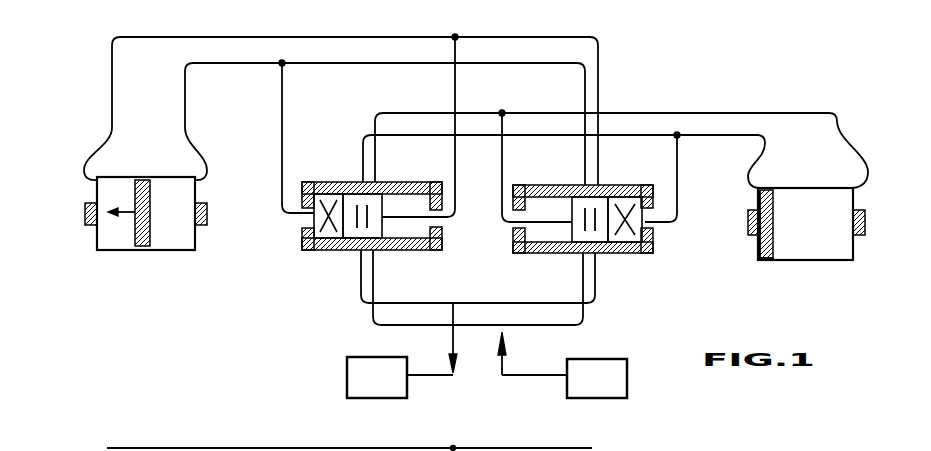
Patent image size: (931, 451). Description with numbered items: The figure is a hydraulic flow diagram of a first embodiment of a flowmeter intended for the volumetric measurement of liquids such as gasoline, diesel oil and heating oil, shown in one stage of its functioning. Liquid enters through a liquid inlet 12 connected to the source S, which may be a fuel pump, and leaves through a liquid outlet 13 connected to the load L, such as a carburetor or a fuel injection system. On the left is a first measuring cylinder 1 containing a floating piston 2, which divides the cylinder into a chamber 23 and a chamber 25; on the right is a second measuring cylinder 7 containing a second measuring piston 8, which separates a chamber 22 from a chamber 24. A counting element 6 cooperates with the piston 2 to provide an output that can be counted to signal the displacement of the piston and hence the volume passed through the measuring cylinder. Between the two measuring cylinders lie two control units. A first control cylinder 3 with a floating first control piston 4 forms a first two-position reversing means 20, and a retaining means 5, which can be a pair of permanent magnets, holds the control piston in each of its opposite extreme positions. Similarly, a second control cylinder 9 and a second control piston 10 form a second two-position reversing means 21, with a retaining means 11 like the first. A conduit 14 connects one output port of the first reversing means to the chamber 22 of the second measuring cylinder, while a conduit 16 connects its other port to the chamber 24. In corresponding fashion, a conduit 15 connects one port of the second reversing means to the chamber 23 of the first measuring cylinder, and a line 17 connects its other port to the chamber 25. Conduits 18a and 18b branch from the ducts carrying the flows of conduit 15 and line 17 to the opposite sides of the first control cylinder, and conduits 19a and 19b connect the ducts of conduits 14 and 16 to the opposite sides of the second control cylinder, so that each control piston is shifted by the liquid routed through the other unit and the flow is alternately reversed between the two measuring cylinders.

The first measuring cylinder 1 is at (105, 252).
The floating piston 2 is at (145, 182).
The first control cylinder 3 is at (318, 182).
The first control piston 4 is at (340, 198).
The retaining means 5 is at (302, 208).
The counting element 6 is at (85, 213).
The second measuring cylinder 7 is at (758, 250).
The second measuring piston 8 is at (768, 261).
The second control cylinder 9 is at (608, 205).
The second control piston 10 is at (628, 205).
The retaining means 11 is at (540, 228).
The liquid inlet 12 is at (405, 352).
The liquid outlet 13 is at (559, 367).
The conduit 14 is at (638, 113).
The conduit 15 is at (336, 64).
The conduit 16 is at (716, 134).
The line 17 is at (195, 37).
The conduit 18a is at (282, 128).
The conduit 18b is at (458, 88).
The conduit 19a is at (678, 178).
The conduit 19b is at (502, 156).
The two-position reversing means 20 is at (365, 219).
The two-position reversing means 21 is at (597, 226).
The chamber 22 is at (833, 200).
The chamber 23 is at (172, 195).
The chamber 24 is at (787, 243).
The chamber 25 is at (112, 228).